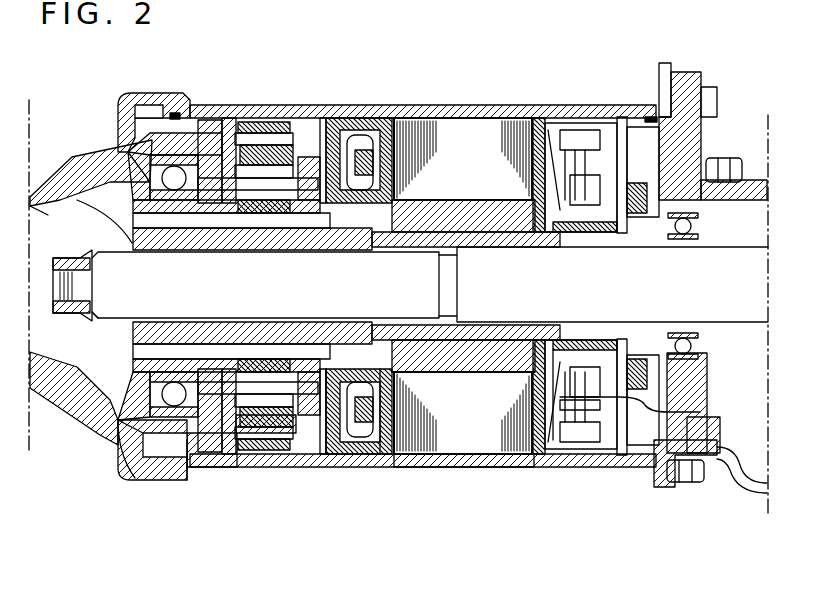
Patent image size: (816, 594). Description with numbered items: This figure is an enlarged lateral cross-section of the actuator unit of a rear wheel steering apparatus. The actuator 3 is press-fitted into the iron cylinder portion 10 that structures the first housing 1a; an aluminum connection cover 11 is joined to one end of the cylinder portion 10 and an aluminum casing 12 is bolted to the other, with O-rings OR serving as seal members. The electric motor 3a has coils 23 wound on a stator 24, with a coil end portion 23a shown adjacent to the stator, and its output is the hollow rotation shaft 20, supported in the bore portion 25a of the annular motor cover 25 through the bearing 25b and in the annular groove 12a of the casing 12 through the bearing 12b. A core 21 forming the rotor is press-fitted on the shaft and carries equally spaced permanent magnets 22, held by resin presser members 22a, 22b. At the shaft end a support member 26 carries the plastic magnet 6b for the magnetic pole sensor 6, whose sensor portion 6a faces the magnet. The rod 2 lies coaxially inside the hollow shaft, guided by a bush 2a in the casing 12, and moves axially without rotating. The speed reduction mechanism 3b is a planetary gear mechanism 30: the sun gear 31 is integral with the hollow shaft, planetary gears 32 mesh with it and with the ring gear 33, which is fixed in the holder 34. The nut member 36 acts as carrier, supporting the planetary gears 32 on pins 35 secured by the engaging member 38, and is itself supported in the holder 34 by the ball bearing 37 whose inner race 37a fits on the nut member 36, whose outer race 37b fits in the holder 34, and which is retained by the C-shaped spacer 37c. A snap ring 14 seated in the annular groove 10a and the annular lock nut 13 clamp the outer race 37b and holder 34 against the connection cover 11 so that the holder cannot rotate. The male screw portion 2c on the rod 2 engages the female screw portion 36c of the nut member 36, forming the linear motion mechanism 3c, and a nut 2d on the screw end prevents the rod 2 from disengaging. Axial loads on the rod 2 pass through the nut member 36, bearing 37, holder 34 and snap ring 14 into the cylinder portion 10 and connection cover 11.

The first housing 1a is at (467, 100).
The rod 2 is at (505, 302).
The bush 2a is at (752, 188).
The male screw portion 2c is at (100, 327).
The nut 2d is at (70, 320).
The actuator 3 is at (594, 100).
The electric motor 3a is at (439, 445).
The speed reduction mechanism 3b is at (230, 445).
The linear motion mechanism 3c is at (117, 334).
The magnetic pole sensor 6 is at (636, 172).
The bracket bearing holder portion 6a is at (652, 197).
The plastic magnet 6b is at (644, 422).
The cylinder portion 10 is at (452, 110).
The annular groove 10a is at (322, 452).
The connection cover 11 is at (133, 180).
The casing 12 is at (691, 160).
The annular groove 12a is at (677, 422).
The bearing 12b is at (717, 435).
The lock nut 13 is at (143, 97).
The snap ring 14 is at (324, 113).
The hollow rotation shaft 20 is at (429, 183).
The core 21 is at (469, 217).
The permanent magnet 22 is at (457, 402).
The presser member 22a is at (409, 419).
The presser member 22b is at (557, 452).
The coil 23 is at (556, 143).
The encoder board 23a is at (589, 432).
The stator 24 is at (519, 197).
The motor cover 25 is at (369, 120).
The bore portion 25a is at (349, 457).
The bearing 25b is at (305, 402).
The support member 26 is at (646, 452).
The planetary gear mechanism 30 is at (263, 429).
The sun gear 31 is at (350, 133).
The planetary gear 32 is at (278, 122).
The ring gear 33 is at (257, 127).
The holder 34 is at (227, 133).
The pin 35 is at (202, 187).
The nut member 36 is at (113, 163).
The female screw portion 36c is at (70, 197).
The bearing 37 is at (147, 170).
The inner race 37a is at (157, 442).
The outer race 37b is at (182, 483).
The spacer 37c is at (133, 437).
The engaging member 38 is at (306, 124).
The O-ring OR is at (172, 110).